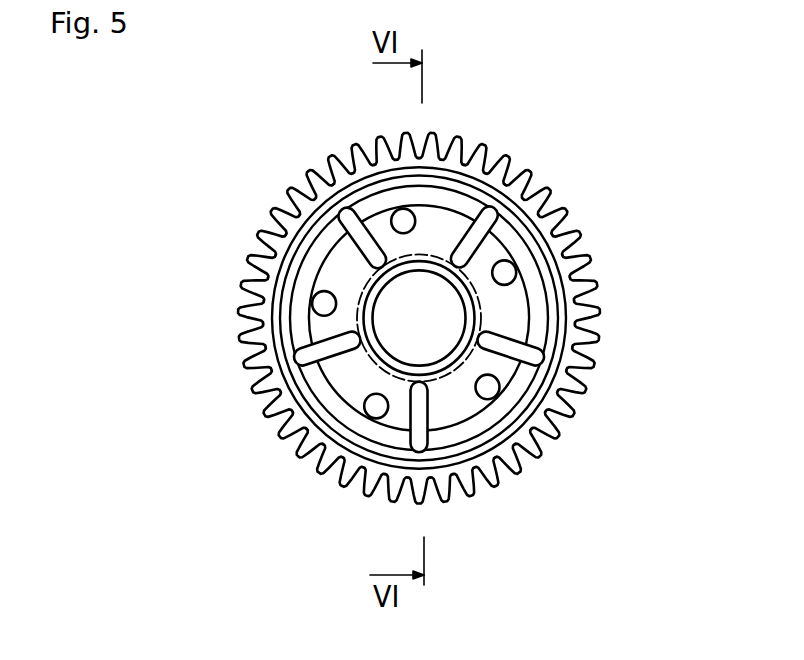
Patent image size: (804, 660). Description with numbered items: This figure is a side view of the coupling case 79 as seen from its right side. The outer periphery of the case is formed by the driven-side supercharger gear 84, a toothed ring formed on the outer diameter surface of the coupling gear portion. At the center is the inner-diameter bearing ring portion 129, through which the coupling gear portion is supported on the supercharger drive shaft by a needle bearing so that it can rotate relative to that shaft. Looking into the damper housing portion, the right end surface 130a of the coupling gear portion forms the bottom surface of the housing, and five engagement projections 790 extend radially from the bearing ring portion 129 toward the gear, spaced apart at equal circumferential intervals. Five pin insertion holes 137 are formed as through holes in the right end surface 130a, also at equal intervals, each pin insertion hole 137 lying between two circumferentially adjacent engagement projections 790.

The coupling case 79 is at (546, 128).
The driven-side supercharger gear 84 is at (583, 252).
The bearing ring portion 129 is at (456, 310).
The pin insertion holes 137 is at (322, 308).
The engagement projections 790 is at (322, 350).
The right end surface 130a is at (473, 420).